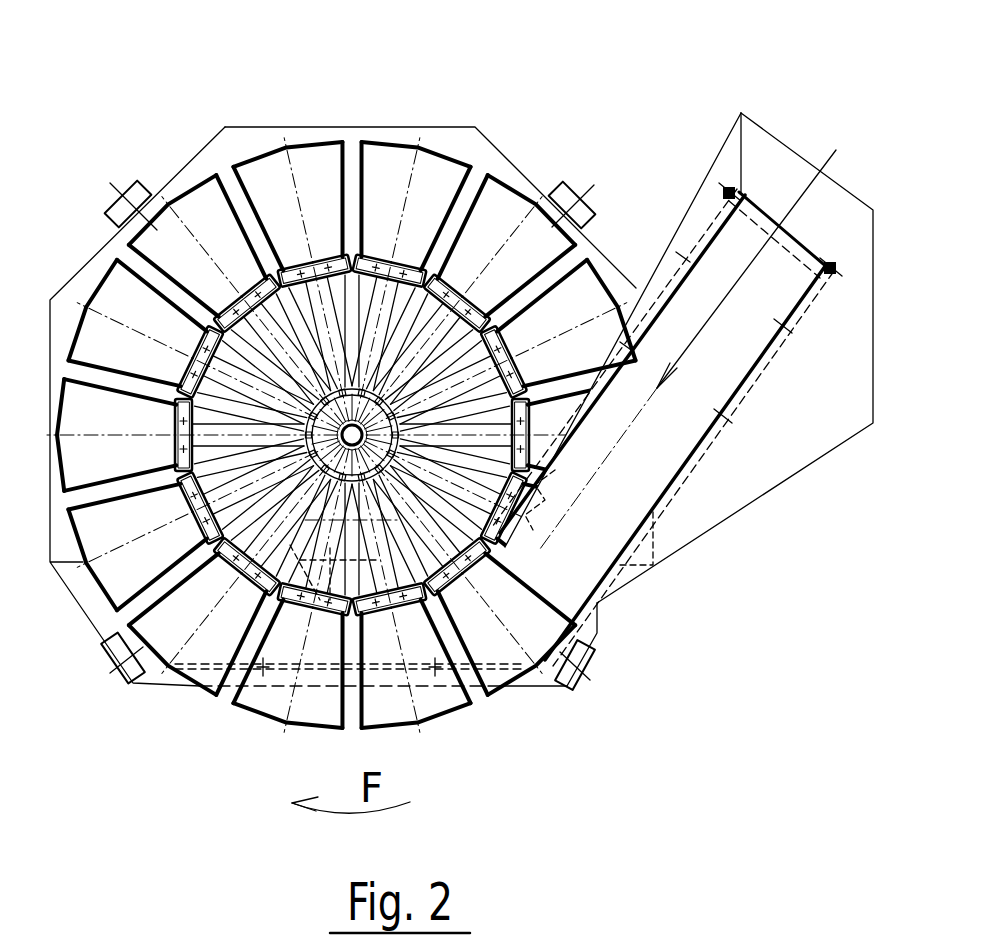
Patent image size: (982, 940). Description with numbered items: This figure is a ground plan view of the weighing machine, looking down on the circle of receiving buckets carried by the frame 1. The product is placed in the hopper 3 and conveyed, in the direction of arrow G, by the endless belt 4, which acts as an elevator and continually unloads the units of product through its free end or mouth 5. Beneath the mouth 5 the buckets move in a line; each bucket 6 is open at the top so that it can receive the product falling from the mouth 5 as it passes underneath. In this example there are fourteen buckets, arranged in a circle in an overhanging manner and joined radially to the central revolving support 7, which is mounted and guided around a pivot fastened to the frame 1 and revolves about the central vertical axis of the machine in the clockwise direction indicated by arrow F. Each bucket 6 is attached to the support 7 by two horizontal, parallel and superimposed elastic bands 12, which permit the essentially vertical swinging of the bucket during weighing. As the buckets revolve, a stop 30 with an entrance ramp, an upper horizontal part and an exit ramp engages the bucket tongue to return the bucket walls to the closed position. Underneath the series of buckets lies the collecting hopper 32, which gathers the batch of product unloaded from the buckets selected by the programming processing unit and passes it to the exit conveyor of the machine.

The frame 1 is at (142, 686).
The hopper 3 is at (833, 400).
The endless belt 4 is at (653, 477).
The mouth 5 is at (597, 640).
The bucket 6 is at (480, 647).
The central revolving support 7 is at (349, 393).
The elastic bands 12 is at (248, 430).
The stop 30 is at (627, 597).
The collecting hopper 32 is at (458, 133).